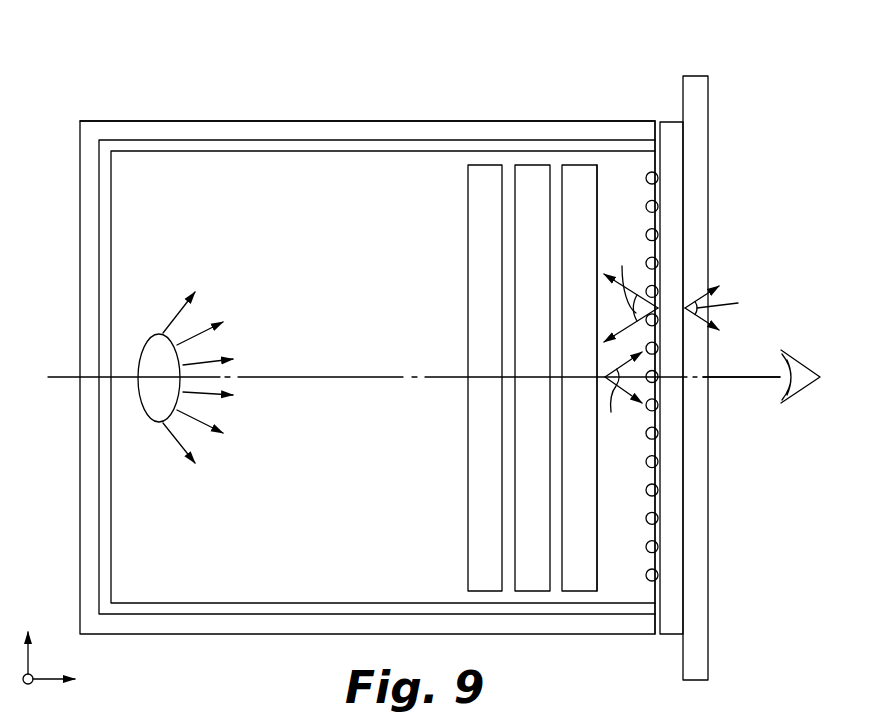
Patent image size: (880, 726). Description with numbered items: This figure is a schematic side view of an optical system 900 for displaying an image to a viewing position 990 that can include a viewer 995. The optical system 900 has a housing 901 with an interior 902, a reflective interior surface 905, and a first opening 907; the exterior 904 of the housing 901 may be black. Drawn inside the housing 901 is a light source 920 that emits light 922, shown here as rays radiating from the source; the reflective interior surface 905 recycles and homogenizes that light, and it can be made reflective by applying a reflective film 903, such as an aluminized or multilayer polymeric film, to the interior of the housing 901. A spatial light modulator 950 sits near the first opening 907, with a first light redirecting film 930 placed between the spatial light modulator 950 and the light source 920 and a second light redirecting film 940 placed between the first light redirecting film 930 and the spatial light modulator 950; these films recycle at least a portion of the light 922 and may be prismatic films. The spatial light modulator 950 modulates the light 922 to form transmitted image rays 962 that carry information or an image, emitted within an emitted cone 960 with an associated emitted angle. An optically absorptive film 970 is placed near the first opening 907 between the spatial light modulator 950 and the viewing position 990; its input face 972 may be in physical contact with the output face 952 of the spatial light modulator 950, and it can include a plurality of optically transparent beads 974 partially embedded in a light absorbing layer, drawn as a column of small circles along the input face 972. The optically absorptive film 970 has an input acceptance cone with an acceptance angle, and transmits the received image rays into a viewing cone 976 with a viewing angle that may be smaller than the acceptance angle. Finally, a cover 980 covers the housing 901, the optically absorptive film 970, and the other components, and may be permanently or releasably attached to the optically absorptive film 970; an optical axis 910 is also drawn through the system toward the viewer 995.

The optical system 900 is at (732, 75).
The housing 901 is at (168, 634).
The interior 902 is at (223, 220).
The reflective film 903 is at (248, 606).
The exterior 904 is at (197, 120).
The reflective interior surface 905 is at (307, 614).
The first opening 907 is at (647, 476).
The optical axis 910 is at (61, 377).
The light source 920 is at (150, 343).
The light 922 is at (200, 416).
The first light redirecting film 930 is at (487, 173).
The second light redirecting film 940 is at (533, 173).
The spatial light modulator 950 is at (580, 173).
The output face 952 is at (598, 176).
The emitted cone 960 is at (606, 375).
The image rays 962 is at (606, 379).
The optically absorptive film 970 is at (672, 625).
The input face 972 is at (646, 565).
The optically transparent beads 974 is at (658, 518).
The viewing cone 976 is at (699, 294).
The cover 980 is at (698, 649).
The viewing position 990 is at (743, 395).
The viewer 995 is at (800, 369).